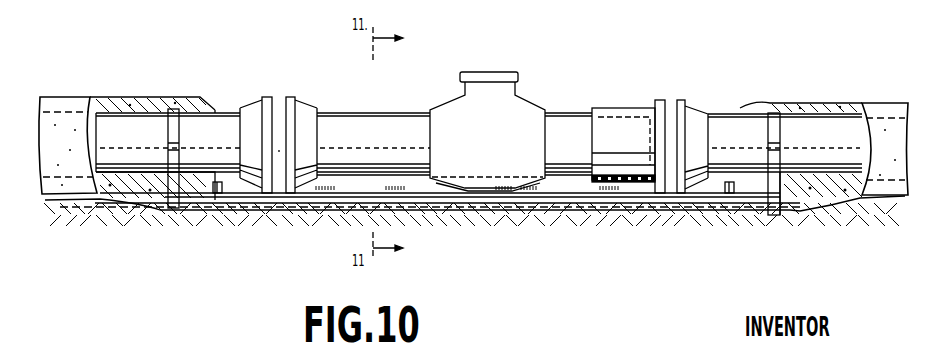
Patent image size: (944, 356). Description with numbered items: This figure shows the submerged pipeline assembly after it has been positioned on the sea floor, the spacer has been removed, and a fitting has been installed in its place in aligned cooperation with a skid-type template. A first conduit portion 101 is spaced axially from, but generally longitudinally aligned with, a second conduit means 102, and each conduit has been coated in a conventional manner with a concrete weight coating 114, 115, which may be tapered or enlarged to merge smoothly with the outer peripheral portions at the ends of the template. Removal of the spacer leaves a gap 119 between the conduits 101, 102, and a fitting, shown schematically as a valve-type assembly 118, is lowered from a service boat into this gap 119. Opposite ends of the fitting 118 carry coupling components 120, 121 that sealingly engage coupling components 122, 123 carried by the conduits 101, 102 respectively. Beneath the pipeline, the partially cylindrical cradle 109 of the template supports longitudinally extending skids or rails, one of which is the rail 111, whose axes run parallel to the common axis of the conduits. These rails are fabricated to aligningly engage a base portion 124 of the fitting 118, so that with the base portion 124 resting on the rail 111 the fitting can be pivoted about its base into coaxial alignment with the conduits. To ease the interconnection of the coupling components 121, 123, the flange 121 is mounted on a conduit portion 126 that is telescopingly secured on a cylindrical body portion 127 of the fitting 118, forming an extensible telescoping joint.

The first conduit portion 101 is at (226, 125).
The second conduit means 102 is at (720, 122).
The partially cylindrical cradle 109 is at (318, 215).
The skid or rail 111 is at (447, 190).
The concrete weight coating 114 is at (66, 104).
The concrete weight coating 115 is at (882, 110).
The valve-type assembly 118 is at (515, 115).
The gap 119 is at (279, 108).
The coupling component 120 is at (296, 97).
The coupling component 121 is at (659, 100).
The coupling component 122 is at (267, 96).
The coupling component 123 is at (681, 100).
The base portion 124 is at (500, 190).
The conduit portion 126 is at (631, 108).
The cylindrical body portion 127 is at (573, 158).